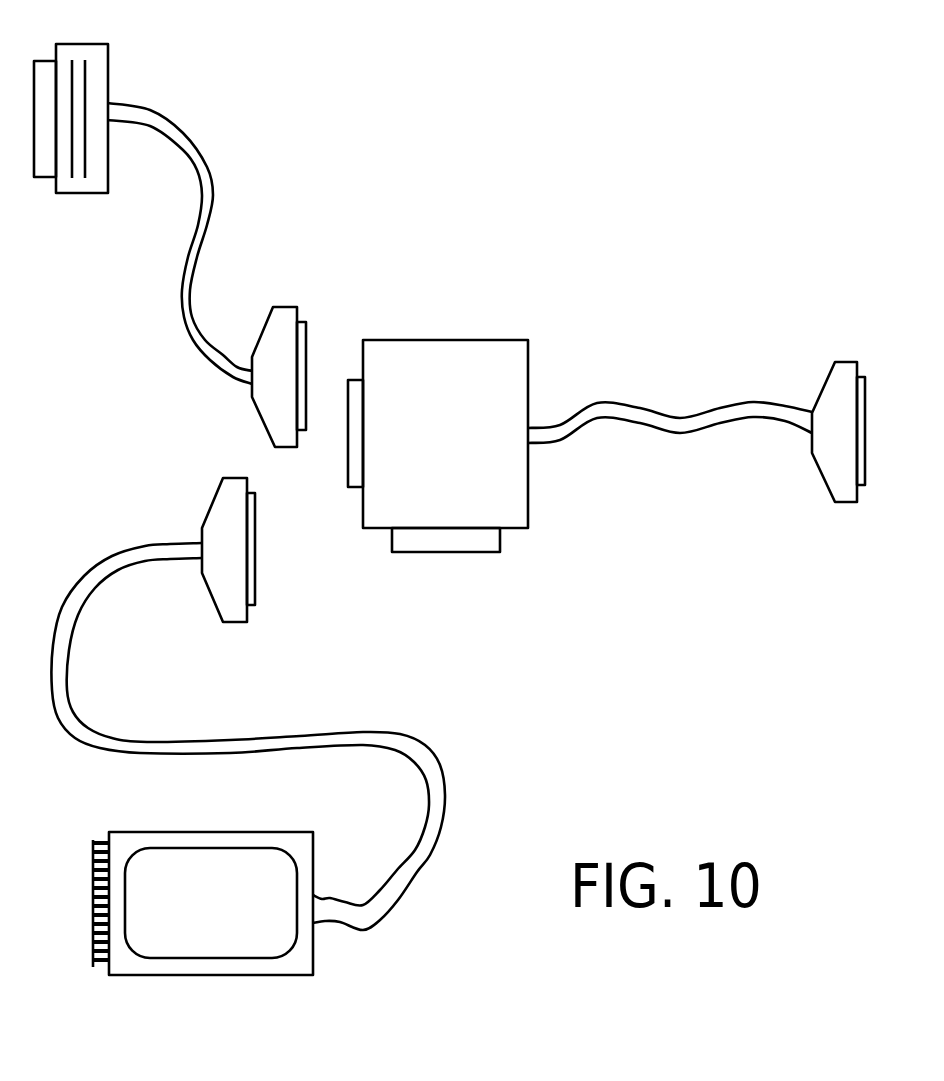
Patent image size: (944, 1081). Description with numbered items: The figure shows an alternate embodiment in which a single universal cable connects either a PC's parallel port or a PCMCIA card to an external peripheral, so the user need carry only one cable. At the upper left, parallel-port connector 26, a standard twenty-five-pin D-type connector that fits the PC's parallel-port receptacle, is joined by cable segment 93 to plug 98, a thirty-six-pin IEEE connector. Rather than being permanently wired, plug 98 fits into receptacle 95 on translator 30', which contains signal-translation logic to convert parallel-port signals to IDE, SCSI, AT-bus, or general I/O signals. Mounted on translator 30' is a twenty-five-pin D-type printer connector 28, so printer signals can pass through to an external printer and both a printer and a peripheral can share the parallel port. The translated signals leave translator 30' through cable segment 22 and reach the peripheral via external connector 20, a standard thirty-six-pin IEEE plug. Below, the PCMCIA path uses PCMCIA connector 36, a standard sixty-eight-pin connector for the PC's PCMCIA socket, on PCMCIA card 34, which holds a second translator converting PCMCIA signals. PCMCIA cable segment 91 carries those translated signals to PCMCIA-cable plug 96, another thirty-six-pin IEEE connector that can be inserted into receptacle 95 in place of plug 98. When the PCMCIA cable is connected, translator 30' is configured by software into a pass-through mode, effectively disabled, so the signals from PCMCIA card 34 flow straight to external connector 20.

The parallel-port connector 26 is at (73, 44).
The cable segment 93 is at (162, 113).
The plug 98 is at (268, 312).
The translator 30' is at (445, 410).
The receptacle 95 is at (345, 472).
The printer connector 28 is at (390, 547).
The cable segment 22 is at (630, 409).
The external connector 20 is at (830, 377).
The PCMCIA-cable plug 96 is at (218, 494).
The PCMCIA cable segment 91 is at (106, 552).
The PCMCIA card 34 is at (258, 832).
The PCMCIA connector 36 is at (93, 840).